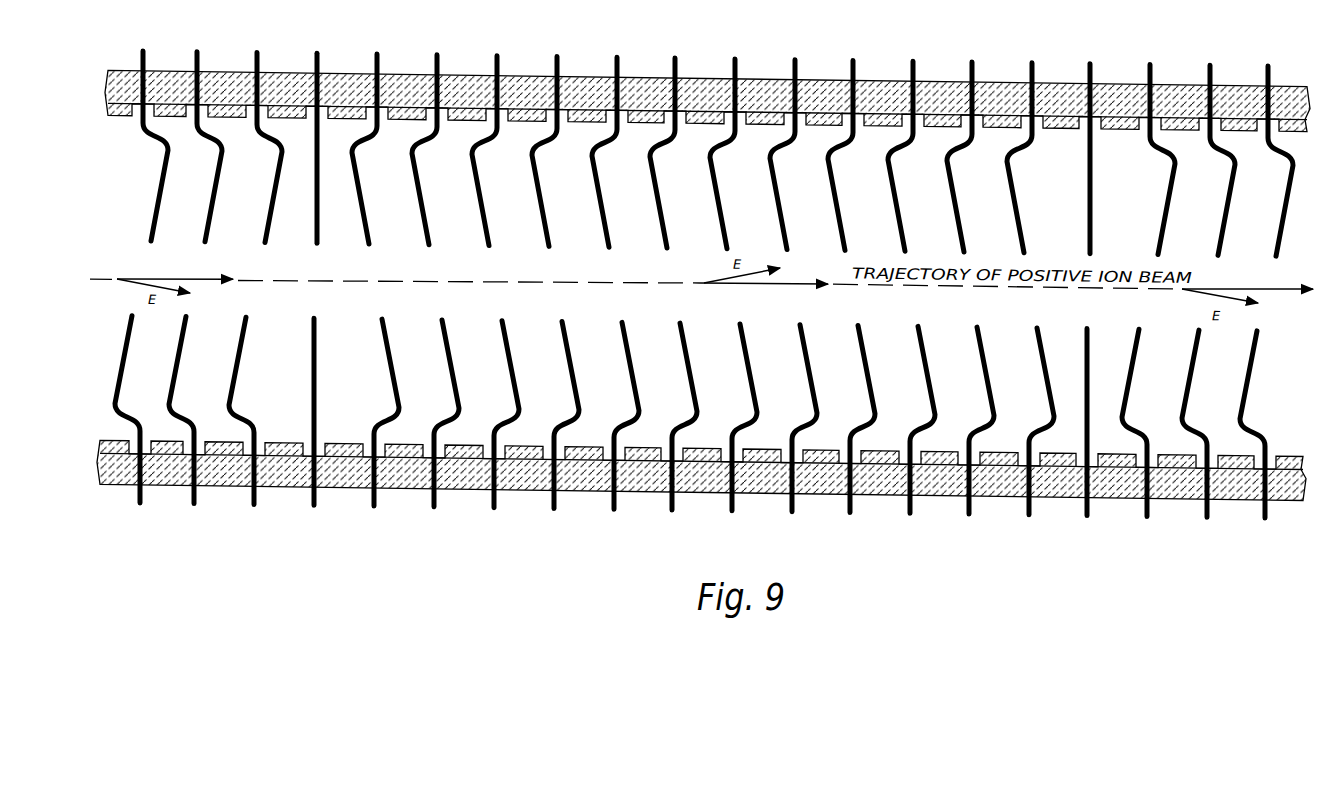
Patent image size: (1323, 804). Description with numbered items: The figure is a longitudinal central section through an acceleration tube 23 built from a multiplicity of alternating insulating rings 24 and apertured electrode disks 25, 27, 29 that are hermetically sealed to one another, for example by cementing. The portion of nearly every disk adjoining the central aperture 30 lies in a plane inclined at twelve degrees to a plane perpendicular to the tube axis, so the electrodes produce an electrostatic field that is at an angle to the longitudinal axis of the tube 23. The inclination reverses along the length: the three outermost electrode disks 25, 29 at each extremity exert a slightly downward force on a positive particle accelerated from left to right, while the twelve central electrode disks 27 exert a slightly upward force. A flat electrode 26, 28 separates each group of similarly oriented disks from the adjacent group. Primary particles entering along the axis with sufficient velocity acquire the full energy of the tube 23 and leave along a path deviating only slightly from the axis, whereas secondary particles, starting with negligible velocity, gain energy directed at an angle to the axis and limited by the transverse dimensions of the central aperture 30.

The acceleration tube 23 is at (635, 64).
The insulating rings 24 is at (401, 72).
The electrode disks 25 is at (198, 53).
The flat electrode 26 is at (318, 52).
The central electrode disks 27 is at (498, 51).
The flat electrode 28 is at (1092, 53).
The electrode disks 29 is at (1212, 51).
The central aperture 30 is at (439, 261).